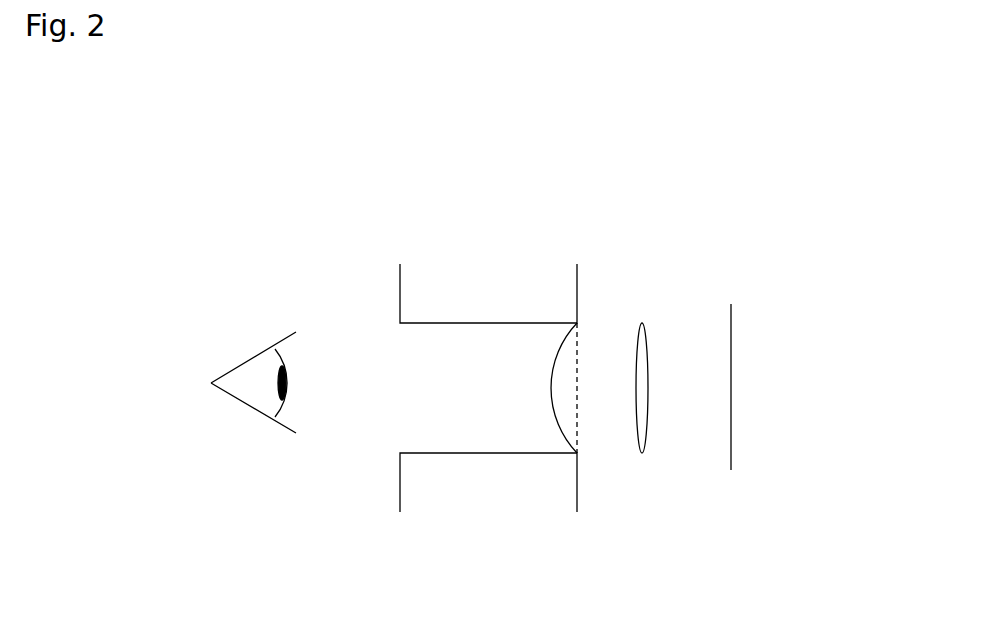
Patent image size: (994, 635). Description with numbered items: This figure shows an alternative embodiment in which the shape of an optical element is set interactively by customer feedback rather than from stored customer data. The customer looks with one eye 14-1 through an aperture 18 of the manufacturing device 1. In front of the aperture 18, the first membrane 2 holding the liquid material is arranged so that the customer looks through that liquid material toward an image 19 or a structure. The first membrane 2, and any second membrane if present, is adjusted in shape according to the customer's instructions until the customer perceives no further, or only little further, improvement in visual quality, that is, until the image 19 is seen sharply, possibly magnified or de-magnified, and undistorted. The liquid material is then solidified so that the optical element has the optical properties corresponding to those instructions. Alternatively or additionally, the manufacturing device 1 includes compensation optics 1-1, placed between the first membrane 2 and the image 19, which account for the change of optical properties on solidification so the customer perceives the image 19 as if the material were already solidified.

The manufacturing device 1 is at (612, 270).
The compensation optics 1-1 is at (643, 408).
The first membrane 2 is at (553, 363).
The eye 14-1 is at (246, 382).
The aperture 18 is at (400, 322).
The image 19 is at (731, 365).